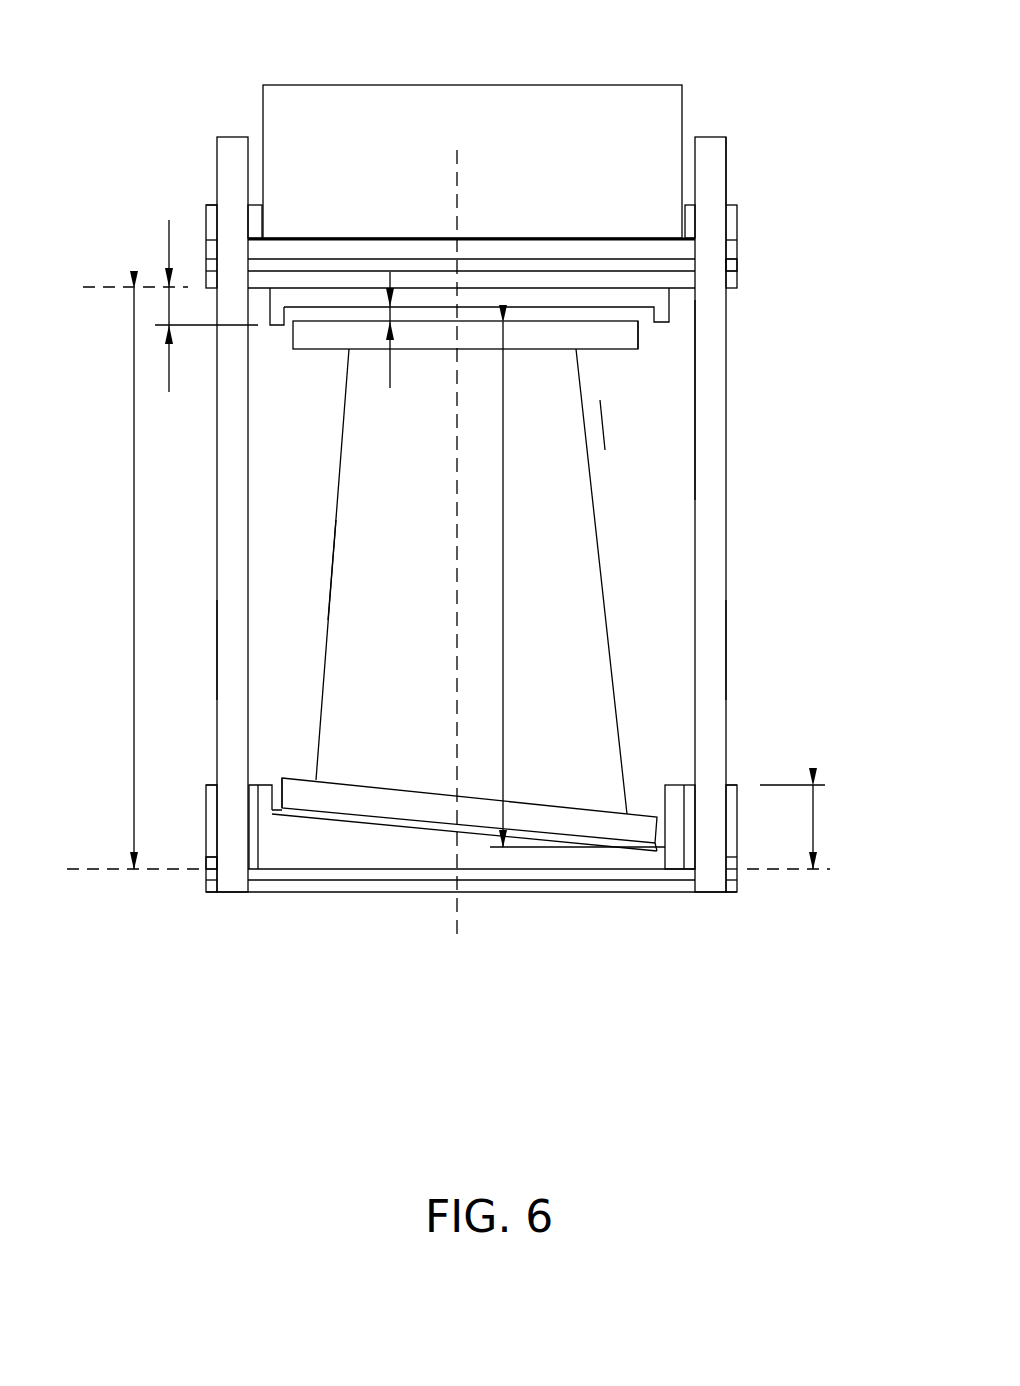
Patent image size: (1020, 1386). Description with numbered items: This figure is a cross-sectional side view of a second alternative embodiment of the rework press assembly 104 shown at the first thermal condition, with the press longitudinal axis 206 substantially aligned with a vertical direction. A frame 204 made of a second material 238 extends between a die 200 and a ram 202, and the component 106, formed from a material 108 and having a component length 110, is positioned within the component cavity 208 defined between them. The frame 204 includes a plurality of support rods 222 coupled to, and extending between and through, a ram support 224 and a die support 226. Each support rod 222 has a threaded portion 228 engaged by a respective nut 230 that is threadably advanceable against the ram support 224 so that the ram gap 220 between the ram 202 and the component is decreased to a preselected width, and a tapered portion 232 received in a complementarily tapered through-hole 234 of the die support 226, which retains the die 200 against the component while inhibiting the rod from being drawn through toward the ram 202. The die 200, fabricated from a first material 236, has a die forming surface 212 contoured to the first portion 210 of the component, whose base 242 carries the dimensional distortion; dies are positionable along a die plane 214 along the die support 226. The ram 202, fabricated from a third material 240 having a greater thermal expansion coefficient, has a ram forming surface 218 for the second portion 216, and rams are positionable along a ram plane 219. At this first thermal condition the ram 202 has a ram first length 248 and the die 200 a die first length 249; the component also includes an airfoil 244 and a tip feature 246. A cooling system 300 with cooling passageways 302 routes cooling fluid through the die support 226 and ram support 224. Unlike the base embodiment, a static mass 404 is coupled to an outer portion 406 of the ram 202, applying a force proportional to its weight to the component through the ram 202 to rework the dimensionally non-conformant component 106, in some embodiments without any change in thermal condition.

The rework press assembly 104 is at (815, 216).
The component 106 is at (330, 618).
The material 108 is at (345, 528).
The component length 110 is at (512, 595).
The die 200 is at (265, 855).
The ram 202 is at (672, 302).
The frame 204 is at (833, 398).
The press longitudinal axis 206 is at (458, 153).
The component cavity 208 is at (648, 465).
The first portion 210 is at (278, 758).
The die forming surface 212 is at (270, 812).
The die plane 214 is at (805, 872).
The second portion 216 is at (643, 372).
The ram forming surface 218 is at (270, 337).
The ram plane 219 is at (110, 287).
The ram gap 220 is at (390, 313).
The support rod 222 is at (242, 152).
The ram support 224 is at (432, 237).
The die support 226 is at (730, 796).
The threaded portion 228 is at (230, 205).
The nut 230 is at (256, 223).
The tapered portion 232 is at (222, 857).
The tapered through-hole 234 is at (207, 777).
The first material 236 is at (677, 850).
The second material 238 is at (225, 657).
The third material 240 is at (672, 315).
The base 242 is at (372, 795).
The airfoil 244 is at (575, 632).
The tip feature 246 is at (303, 345).
The ram first length 248 is at (168, 305).
The die first length 249 is at (822, 830).
The cooling system 300 is at (175, 212).
The cooling passageway 302 is at (745, 264).
The mass 404 is at (333, 98).
The outer portion 406 is at (530, 236).